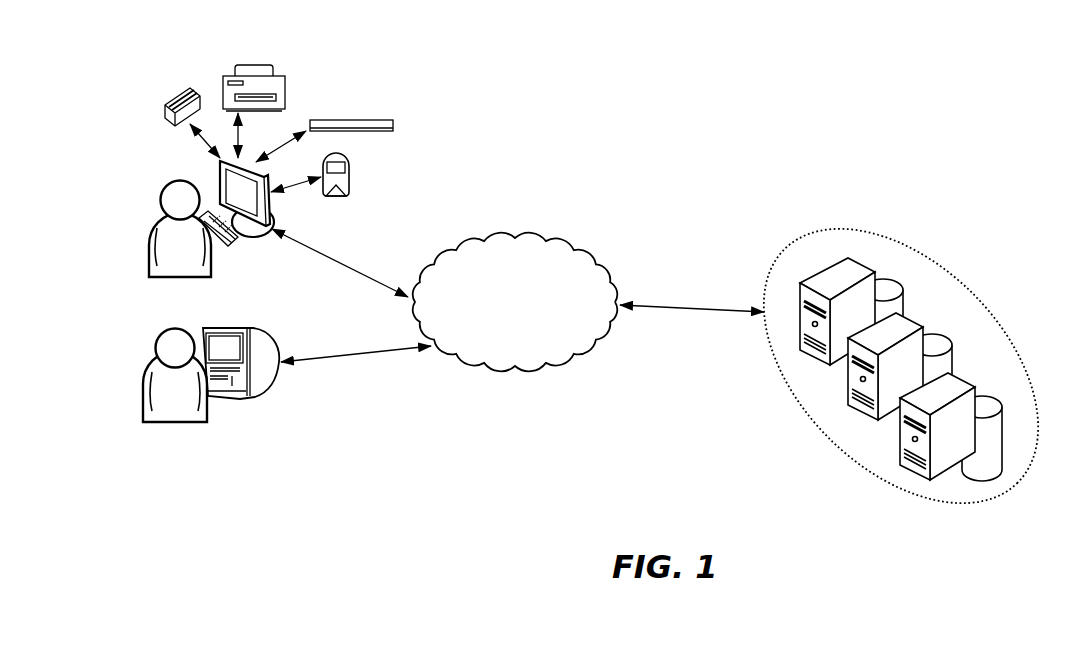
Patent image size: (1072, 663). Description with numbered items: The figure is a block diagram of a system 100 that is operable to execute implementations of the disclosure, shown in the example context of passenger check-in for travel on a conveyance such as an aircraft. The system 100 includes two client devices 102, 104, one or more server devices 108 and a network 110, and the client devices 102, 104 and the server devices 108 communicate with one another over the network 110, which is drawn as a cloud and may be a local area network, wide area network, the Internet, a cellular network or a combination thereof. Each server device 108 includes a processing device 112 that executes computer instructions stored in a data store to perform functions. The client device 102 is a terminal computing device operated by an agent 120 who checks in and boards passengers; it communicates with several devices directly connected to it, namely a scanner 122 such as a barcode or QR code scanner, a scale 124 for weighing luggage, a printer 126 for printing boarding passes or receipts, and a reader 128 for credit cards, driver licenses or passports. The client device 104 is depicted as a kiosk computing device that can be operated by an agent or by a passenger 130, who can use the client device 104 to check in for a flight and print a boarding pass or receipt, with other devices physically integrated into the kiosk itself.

The system 100 is at (758, 139).
The client device 102 is at (254, 237).
The client device 104 is at (273, 390).
The server device 108 is at (892, 366).
The network 110 is at (517, 230).
The processing device 112 is at (828, 266).
The agent 120 is at (161, 198).
The scanner 122 is at (351, 174).
The scale 124 is at (372, 120).
The printer 126 is at (287, 74).
The reader 128 is at (169, 101).
The passenger 130 is at (157, 349).